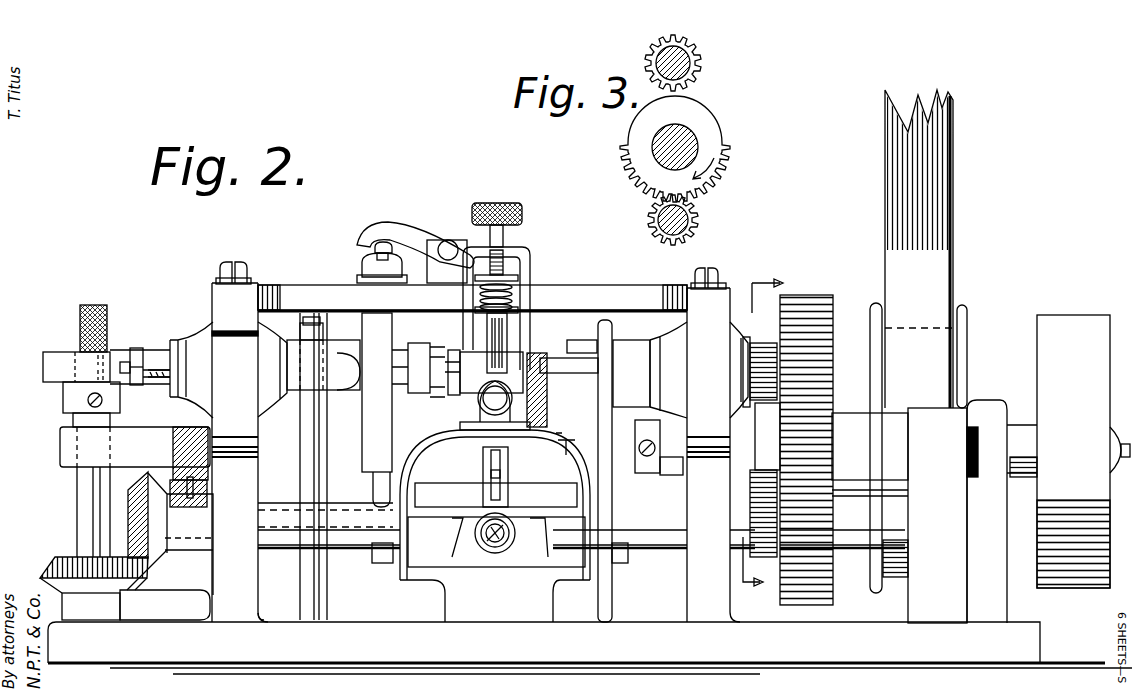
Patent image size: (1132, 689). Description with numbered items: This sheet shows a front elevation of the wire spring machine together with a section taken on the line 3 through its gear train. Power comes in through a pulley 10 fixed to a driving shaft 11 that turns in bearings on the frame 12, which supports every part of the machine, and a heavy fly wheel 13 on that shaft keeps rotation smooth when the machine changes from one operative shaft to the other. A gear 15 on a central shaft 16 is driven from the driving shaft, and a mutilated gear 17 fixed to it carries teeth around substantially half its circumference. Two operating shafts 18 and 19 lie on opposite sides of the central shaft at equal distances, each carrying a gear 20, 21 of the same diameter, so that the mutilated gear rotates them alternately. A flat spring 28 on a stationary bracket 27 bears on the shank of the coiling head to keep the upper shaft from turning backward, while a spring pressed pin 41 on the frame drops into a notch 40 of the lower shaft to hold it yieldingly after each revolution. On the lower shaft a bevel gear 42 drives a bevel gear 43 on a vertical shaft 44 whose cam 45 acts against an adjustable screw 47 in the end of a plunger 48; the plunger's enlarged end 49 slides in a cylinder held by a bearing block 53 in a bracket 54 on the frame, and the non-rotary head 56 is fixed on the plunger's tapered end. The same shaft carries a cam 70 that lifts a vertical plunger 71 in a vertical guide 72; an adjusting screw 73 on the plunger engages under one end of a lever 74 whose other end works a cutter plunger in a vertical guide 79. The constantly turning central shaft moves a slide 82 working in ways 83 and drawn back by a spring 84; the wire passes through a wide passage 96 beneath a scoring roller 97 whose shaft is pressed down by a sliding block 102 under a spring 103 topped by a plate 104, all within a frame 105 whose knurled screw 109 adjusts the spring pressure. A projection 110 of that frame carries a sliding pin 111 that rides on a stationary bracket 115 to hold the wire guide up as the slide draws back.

In FIG. 2, the section line 3 is at (763, 434).
In FIG. 2, the pulley 10 is at (967, 320).
In FIG. 2, the driving shaft 11 is at (1018, 430).
In FIG. 2, the frame 12 is at (290, 297).
In FIG. 2, the fly wheel 13 is at (1054, 326).
In FIG. 2, the gear 15 is at (817, 318).
In FIG. 2, the central shaft 16 is at (756, 447).
In FIG. 3, the central shaft 16 is at (692, 135).
In FIG. 2, the mutilated gear 17 is at (767, 440).
In FIG. 3, the mutilated gear 17 is at (730, 146).
In FIG. 3, the operating shaft 18 is at (688, 70).
In FIG. 2, the operating shaft 19 is at (355, 546).
In FIG. 3, the operating shaft 19 is at (690, 214).
In FIG. 3, the gear 20 is at (693, 47).
In FIG. 3, the gear 21 is at (698, 237).
In FIG. 2, the bracket 27 is at (558, 437).
In FIG. 2, the spring 28 is at (558, 405).
In FIG. 2, the notch 40 is at (200, 507).
In FIG. 2, the spring pressed pin 41 is at (197, 493).
In FIG. 2, the bevel gear 42 is at (161, 557).
In FIG. 2, the bevel gear 43 is at (135, 580).
In FIG. 2, the vertical shaft 44 is at (80, 498).
In FIG. 2, the cam 45 is at (43, 365).
In FIG. 2, the adjustable screw 47 is at (127, 355).
In FIG. 2, the plunger 48 is at (403, 352).
In FIG. 2, the enlarged end 49 is at (160, 385).
In FIG. 2, the bearing block 53 is at (207, 335).
In FIG. 2, the bracket 54 is at (245, 427).
In FIG. 2, the non-rotary head 56 is at (420, 393).
In FIG. 2, the cam 70 is at (385, 566).
In FIG. 2, the vertical plunger 71 is at (373, 491).
In FIG. 2, the vertical guide 72 is at (362, 443).
In FIG. 2, the adjusting screw 73 is at (373, 248).
In FIG. 2, the lever 74 is at (413, 240).
In FIG. 2, the vertical guide 79 is at (439, 298).
In FIG. 2, the slide 82 is at (560, 486).
In FIG. 2, the ways 83 is at (460, 527).
In FIG. 2, the spring 84 is at (488, 553).
In FIG. 2, the passage 96 is at (472, 395).
In FIG. 2, the roller 97 is at (492, 358).
In FIG. 2, the sliding block 102 is at (513, 315).
In FIG. 2, the spring 103 is at (510, 294).
In FIG. 2, the plate 104 is at (508, 273).
In FIG. 2, the frame 105 is at (528, 253).
In FIG. 2, the screw 109 is at (503, 237).
In FIG. 2, the projection 110 is at (568, 368).
In FIG. 2, the sliding pin 111 is at (613, 364).
In FIG. 2, the bracket 115 is at (612, 327).